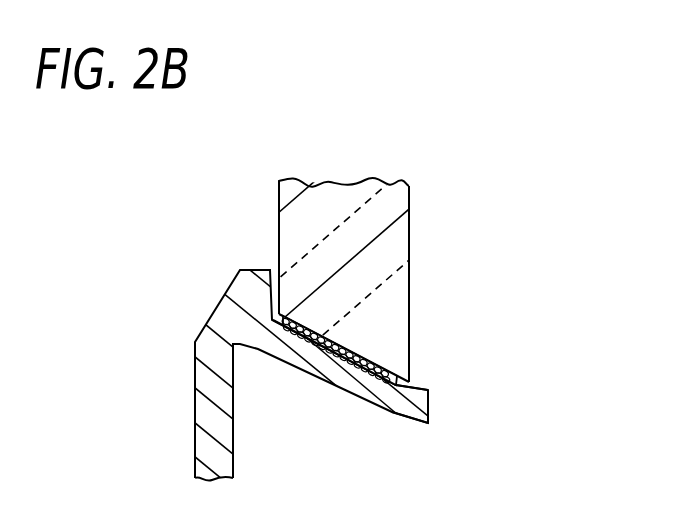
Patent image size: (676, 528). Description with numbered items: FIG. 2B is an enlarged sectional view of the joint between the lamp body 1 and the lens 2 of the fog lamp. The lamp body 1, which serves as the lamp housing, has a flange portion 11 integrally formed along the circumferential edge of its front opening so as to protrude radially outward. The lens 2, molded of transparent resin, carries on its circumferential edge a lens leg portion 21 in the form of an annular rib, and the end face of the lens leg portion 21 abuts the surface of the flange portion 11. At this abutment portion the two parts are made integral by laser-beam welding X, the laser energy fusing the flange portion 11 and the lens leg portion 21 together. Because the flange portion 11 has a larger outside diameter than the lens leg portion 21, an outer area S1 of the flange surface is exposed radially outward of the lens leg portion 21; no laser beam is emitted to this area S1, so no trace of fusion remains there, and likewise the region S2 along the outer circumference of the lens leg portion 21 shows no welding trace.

The lamp body 1 is at (203, 417).
The flange portion 11 is at (347, 376).
The lens 2 is at (280, 203).
The lens leg portion 21 is at (385, 250).
The laser-beam welding X is at (370, 318).
The area of the flange portion surface exposed radially outwardly S1 is at (413, 382).
The second surface S2 is at (390, 410).